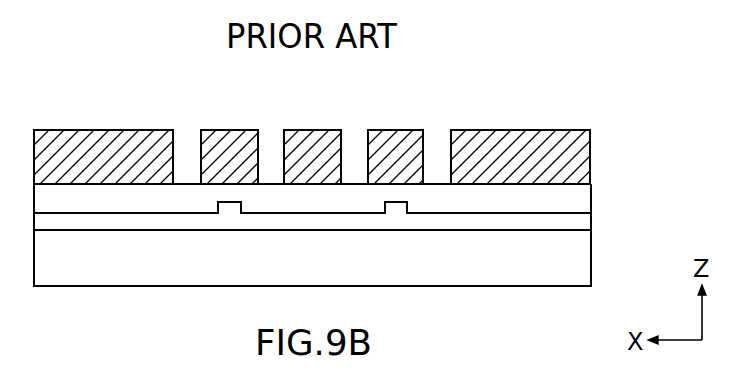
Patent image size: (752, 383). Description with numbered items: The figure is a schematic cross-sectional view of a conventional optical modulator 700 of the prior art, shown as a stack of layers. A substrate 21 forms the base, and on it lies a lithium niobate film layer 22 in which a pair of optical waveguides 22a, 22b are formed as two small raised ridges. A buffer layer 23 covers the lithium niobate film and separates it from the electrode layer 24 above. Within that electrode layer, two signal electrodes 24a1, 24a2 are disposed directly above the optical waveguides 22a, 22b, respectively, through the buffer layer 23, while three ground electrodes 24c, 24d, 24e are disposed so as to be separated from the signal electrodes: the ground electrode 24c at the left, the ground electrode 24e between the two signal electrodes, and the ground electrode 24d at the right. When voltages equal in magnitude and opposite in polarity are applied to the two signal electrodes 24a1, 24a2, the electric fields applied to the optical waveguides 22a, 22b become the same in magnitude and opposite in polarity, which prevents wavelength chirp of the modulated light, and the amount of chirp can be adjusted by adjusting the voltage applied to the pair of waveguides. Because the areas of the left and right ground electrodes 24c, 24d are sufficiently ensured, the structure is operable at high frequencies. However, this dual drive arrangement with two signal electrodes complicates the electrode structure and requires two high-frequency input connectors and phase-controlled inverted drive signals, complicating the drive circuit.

The prior art semiconductor device 700 is at (557, 49).
The substrate 21 is at (591, 258).
The insulating layer 22 is at (591, 222).
The optical waveguide 22a is at (217, 209).
The optical waveguide 22b is at (408, 205).
The buffer layer 23 is at (591, 197).
The electrode layer 24 is at (591, 159).
The ground electrode 24c is at (103, 130).
The signal electrode 24a1 is at (230, 130).
The ground electrode 24e is at (313, 130).
The signal electrode 24a2 is at (395, 130).
The ground electrode 24d is at (522, 130).